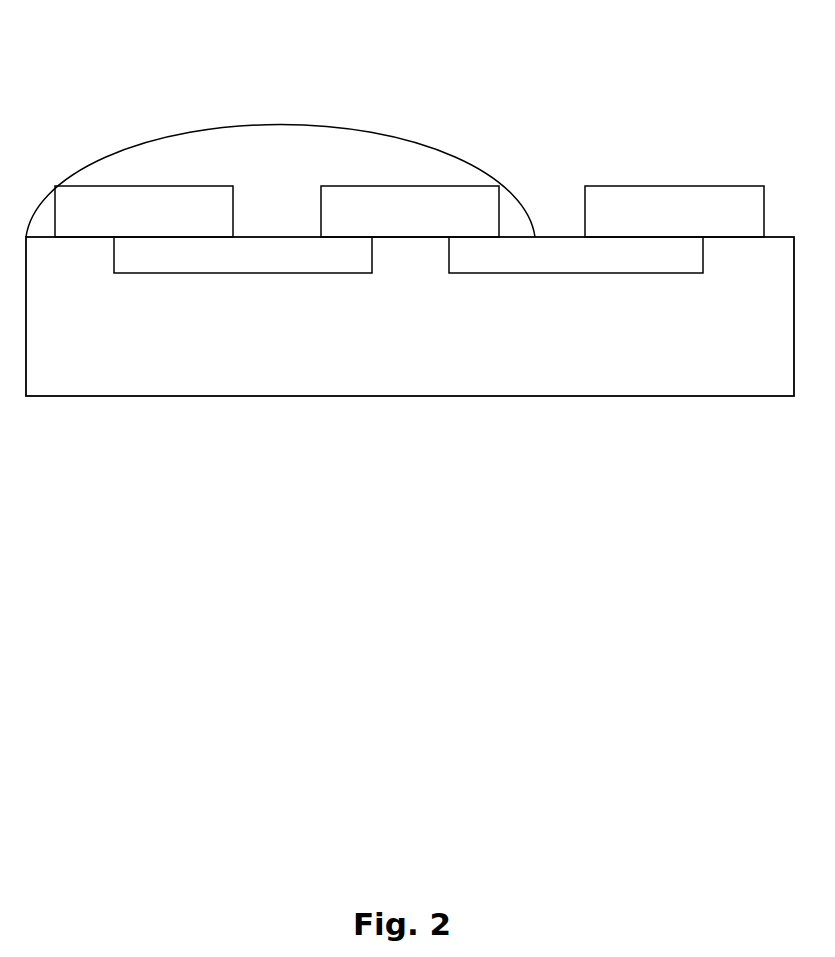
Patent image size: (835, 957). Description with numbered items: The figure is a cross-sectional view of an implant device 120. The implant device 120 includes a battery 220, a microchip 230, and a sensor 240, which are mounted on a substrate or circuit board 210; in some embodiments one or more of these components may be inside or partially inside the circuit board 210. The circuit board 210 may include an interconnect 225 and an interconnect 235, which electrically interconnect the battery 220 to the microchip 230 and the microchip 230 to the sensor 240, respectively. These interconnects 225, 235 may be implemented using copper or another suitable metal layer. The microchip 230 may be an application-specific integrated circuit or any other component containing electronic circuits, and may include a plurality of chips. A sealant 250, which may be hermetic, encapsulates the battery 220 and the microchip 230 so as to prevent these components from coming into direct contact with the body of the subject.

The implant device 120 is at (634, 121).
The circuit board 210 is at (391, 328).
The battery 220 is at (125, 222).
The interconnect 225 is at (216, 270).
The microchip 230 is at (390, 222).
The interconnect 235 is at (549, 270).
The sensor 240 is at (655, 222).
The sealant 250 is at (260, 150).